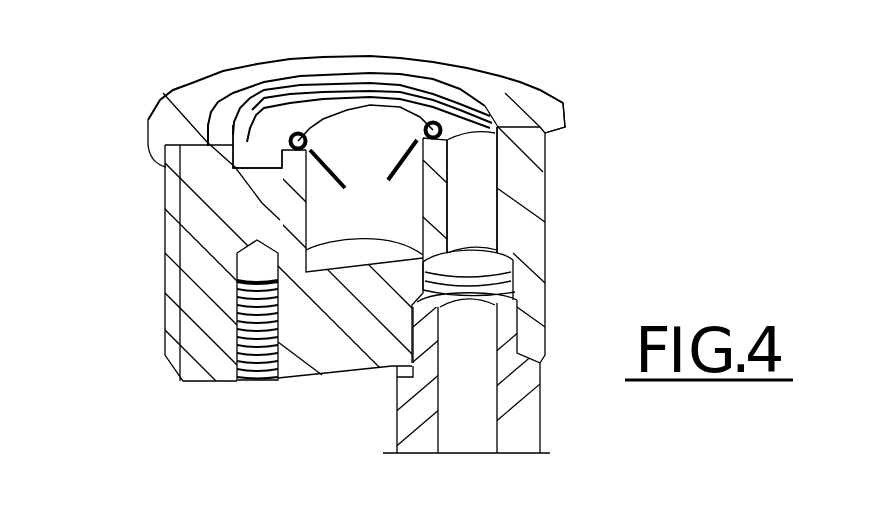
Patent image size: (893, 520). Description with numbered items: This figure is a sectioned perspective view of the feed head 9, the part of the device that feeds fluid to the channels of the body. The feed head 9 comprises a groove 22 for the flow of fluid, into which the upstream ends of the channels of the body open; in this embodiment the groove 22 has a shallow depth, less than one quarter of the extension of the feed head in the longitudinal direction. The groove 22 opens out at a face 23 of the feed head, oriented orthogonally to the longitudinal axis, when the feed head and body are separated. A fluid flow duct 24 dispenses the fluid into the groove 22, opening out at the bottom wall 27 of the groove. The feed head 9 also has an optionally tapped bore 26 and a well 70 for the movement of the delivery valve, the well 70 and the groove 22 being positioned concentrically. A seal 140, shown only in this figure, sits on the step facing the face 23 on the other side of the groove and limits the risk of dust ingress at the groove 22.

The feed head 9 is at (200, 185).
The groove 22 is at (433, 122).
The face 23 is at (513, 79).
The fluid flow duct 24 is at (470, 202).
The bore 26 is at (228, 355).
The bottom wall 27 is at (248, 167).
The well 70 is at (343, 163).
The seal 140 is at (363, 179).